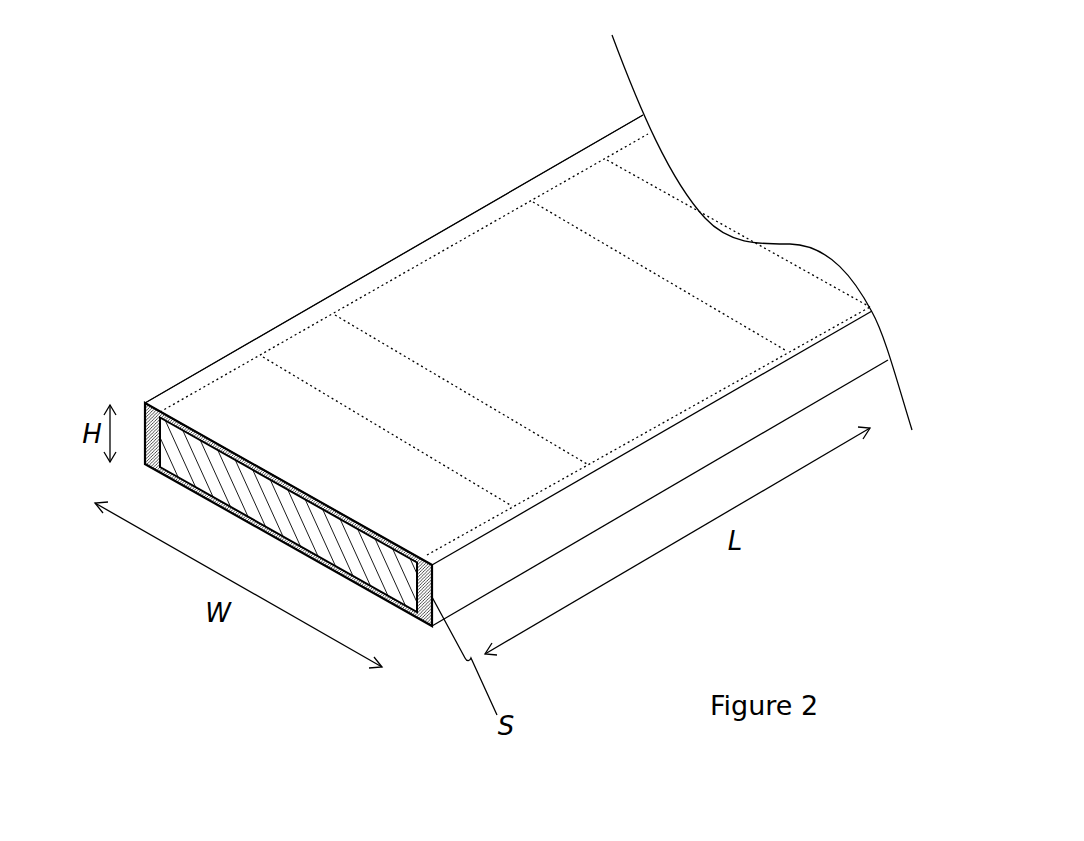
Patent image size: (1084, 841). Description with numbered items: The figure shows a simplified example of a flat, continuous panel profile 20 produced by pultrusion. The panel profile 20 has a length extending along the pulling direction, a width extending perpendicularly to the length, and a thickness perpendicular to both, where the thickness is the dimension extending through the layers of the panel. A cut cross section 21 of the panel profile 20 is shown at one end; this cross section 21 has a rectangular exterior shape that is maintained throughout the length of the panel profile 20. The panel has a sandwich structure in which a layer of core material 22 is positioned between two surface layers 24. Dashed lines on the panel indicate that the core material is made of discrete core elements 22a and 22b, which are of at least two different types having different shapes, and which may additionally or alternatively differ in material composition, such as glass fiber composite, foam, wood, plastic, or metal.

The continuous panel profile 20 is at (323, 308).
The cut cross section 21 is at (138, 408).
The layer of core material 22 is at (320, 522).
The core element 22a is at (448, 279).
The core element 22b is at (585, 181).
The surface layer 24 is at (393, 548).